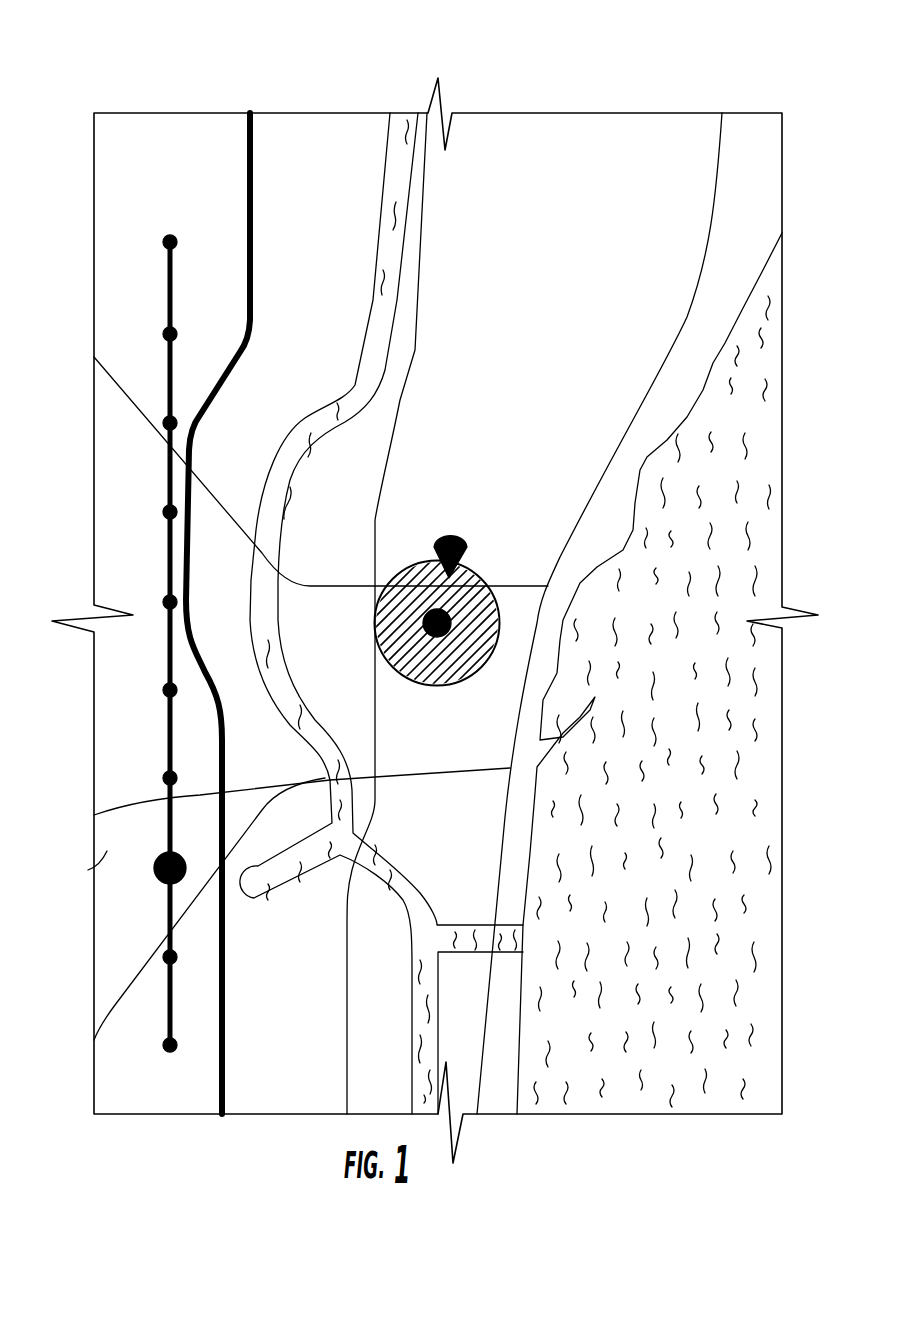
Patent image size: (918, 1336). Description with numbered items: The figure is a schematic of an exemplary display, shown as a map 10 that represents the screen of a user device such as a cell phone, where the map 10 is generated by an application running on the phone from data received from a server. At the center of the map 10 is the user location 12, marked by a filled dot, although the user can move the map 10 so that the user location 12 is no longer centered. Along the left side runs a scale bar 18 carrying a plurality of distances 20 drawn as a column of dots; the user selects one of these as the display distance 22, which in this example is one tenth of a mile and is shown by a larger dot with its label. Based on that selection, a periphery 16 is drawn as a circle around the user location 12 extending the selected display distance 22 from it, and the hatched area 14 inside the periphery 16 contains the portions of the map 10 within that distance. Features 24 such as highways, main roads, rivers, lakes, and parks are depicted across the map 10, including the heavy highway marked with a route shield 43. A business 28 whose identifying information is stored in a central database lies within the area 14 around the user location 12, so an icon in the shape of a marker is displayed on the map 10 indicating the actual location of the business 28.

The map 10 is at (432, 581).
The user location 12 is at (480, 583).
The area 14 is at (437, 643).
The periphery 16 is at (442, 648).
The scale bar 18 is at (112, 643).
The plurality of distances 20 is at (98, 643).
The display distance 22 is at (108, 859).
The features 24 is at (534, 581).
The business 28 is at (469, 534).
The highway route shield 43 is at (257, 260).